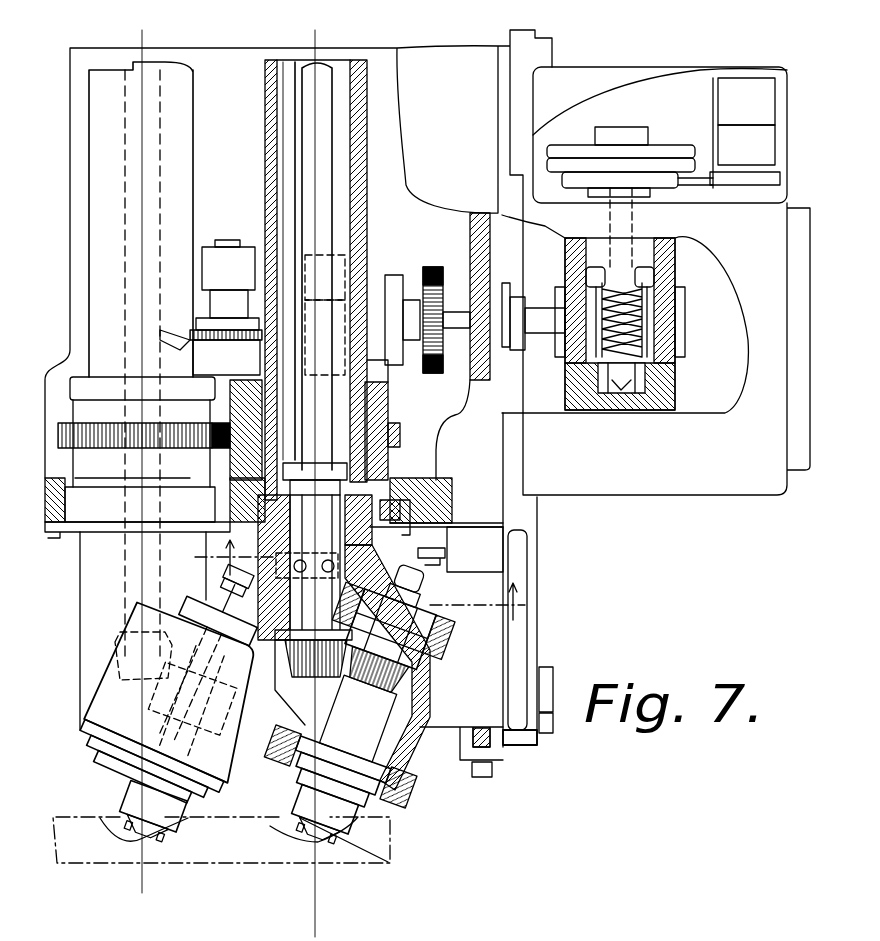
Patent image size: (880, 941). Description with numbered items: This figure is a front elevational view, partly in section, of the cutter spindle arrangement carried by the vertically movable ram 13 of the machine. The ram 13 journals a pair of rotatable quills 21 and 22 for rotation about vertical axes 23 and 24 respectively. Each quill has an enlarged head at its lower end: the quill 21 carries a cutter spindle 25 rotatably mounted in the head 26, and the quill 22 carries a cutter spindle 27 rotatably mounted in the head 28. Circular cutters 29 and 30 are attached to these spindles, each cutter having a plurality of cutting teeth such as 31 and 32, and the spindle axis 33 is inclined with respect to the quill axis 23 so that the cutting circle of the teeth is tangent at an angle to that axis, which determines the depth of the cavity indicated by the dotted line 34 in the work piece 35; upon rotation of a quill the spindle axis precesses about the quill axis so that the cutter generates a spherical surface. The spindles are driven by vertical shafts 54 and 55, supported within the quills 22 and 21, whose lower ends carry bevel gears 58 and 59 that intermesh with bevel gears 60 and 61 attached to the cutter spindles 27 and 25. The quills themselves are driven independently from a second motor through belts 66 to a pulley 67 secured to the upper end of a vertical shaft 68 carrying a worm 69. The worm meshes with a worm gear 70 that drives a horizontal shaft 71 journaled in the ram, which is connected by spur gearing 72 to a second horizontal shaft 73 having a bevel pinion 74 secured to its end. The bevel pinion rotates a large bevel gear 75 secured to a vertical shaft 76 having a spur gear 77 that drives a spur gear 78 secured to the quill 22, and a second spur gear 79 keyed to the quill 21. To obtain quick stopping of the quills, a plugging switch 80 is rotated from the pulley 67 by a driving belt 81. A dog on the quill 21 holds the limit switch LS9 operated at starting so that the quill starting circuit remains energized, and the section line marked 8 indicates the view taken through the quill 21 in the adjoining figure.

The ram 13 is at (243, 50).
The vertical shaft 54 is at (125, 135).
The vertical shaft 55 is at (335, 183).
The bevel pinion 74 is at (300, 255).
The vertical shaft 76 is at (225, 240).
The second horizontal shaft 73 is at (350, 270).
The spur gearing 72 is at (442, 265).
The large bevel gear 75 is at (190, 335).
The spur gear 78 is at (62, 420).
The spur gear 77 is at (236, 408).
The second spur gear 79 is at (400, 432).
The worm gear 70 is at (570, 262).
The horizontal shaft 71 is at (537, 308).
The worm 69 is at (645, 290).
The vertical shaft 68 is at (640, 222).
The belts 66 is at (567, 150).
The pulley 67 is at (665, 145).
The driving belt 81 is at (710, 180).
The plugging switch 80 is at (740, 90).
The quill 22 is at (80, 560).
The quill 21 is at (372, 566).
The bevel gear 58 is at (112, 646).
The cutter spindle 27 is at (133, 677).
The head 28 is at (151, 695).
The bevel gear 60 is at (217, 670).
The bevel gear 59 is at (316, 670).
The bevel gear 61 is at (386, 642).
The head 26 is at (430, 698).
The limit switch LS9 is at (475, 549).
The circular cutter 30 is at (101, 792).
The cutting teeth 32 is at (112, 820).
The circular cutter 29 is at (325, 747).
The cutter spindle 25 is at (388, 705).
The spindle axis 33 is at (80, 857).
The work piece 35 is at (392, 835).
The vertical axis 24 is at (140, 872).
The vertical axis 23 is at (318, 875).
The cutting teeth 31 is at (150, 845).
The cavity dotted line 34 is at (178, 832).
The section line 8 is at (350, 598).